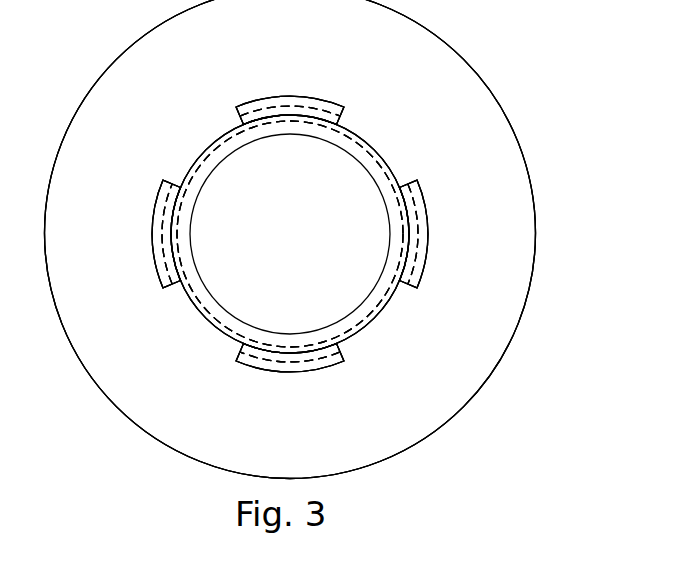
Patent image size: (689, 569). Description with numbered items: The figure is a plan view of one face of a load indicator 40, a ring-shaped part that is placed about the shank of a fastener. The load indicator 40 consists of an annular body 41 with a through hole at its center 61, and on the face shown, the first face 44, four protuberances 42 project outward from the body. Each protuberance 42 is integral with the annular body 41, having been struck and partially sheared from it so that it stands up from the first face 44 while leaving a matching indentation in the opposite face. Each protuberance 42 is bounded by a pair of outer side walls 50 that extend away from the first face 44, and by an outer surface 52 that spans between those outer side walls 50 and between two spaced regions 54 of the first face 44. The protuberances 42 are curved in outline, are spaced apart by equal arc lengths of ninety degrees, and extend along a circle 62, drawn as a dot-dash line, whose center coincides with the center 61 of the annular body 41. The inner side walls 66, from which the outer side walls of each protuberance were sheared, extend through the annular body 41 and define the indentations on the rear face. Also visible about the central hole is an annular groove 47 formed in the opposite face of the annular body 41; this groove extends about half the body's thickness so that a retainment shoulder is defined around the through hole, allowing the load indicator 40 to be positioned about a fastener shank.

The load indicator 40 is at (75, 382).
The annular body 41 is at (523, 313).
The protuberances 42 is at (290, 95).
The first face 44 is at (467, 65).
The annular groove 47 is at (362, 310).
The outer side walls 50 is at (262, 98).
The outer surface 52 is at (330, 100).
The spaced regions 54 is at (196, 143).
The center 61 is at (309, 236).
The circle 62 is at (360, 140).
The inner side walls 66 is at (208, 297).